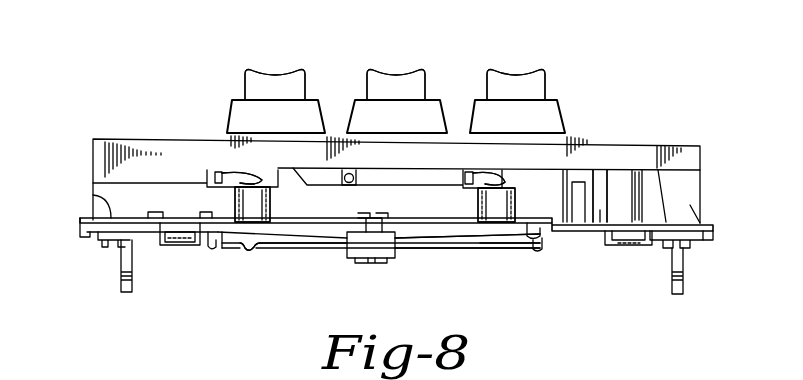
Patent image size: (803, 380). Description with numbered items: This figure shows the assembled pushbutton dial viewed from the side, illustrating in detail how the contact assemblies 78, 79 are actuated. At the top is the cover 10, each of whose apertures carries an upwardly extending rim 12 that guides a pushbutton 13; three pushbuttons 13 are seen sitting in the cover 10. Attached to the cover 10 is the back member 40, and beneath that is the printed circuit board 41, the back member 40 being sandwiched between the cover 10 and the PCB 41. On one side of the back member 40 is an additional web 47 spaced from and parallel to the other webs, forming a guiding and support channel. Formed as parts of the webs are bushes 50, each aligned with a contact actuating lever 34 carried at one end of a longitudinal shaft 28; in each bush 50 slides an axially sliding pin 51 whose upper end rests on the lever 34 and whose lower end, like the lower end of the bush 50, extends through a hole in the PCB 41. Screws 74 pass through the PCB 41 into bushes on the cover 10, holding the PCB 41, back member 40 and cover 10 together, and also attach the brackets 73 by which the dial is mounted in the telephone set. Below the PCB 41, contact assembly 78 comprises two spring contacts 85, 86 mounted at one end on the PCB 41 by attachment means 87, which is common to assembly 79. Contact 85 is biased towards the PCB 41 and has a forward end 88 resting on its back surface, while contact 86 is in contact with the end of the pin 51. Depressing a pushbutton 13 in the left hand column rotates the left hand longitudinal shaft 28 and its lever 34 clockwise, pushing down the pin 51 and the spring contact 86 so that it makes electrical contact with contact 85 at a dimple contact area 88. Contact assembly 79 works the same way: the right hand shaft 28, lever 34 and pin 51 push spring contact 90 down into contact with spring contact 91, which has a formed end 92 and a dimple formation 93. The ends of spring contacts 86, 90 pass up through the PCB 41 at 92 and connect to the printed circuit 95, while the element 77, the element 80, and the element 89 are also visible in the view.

The cover 10 is at (622, 142).
The rim 12 is at (540, 93).
The pushbutton 13 is at (400, 72).
The longitudinal shaft 28 is at (228, 175).
The contact actuating lever 34 is at (243, 178).
The back member 40 is at (92, 209).
The printed circuit board 41 is at (83, 223).
The additional web 47 is at (598, 231).
The bush 50 is at (233, 198).
The axially sliding pin 51 is at (272, 203).
The bracket 73 is at (130, 293).
The screw 74 is at (110, 243).
The clip 77 is at (180, 248).
The contact assembly 78 is at (297, 262).
The contact assembly 79 is at (459, 262).
The clip 80 is at (627, 256).
The spring contact 85 is at (268, 262).
The spring contact 86 is at (322, 241).
The attachment means 87 is at (373, 270).
The forward end 88 is at (212, 245).
The bump 89 is at (250, 250).
The spring contact 90 is at (447, 243).
The spring contact 91 is at (489, 257).
The formed end 92 is at (370, 216).
The dimple formation 93 is at (512, 250).
The printed circuit 95 is at (109, 216).